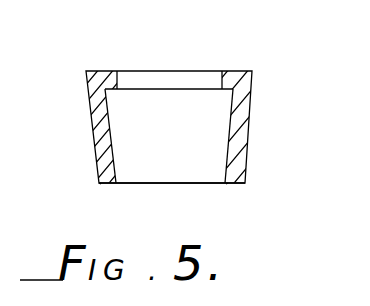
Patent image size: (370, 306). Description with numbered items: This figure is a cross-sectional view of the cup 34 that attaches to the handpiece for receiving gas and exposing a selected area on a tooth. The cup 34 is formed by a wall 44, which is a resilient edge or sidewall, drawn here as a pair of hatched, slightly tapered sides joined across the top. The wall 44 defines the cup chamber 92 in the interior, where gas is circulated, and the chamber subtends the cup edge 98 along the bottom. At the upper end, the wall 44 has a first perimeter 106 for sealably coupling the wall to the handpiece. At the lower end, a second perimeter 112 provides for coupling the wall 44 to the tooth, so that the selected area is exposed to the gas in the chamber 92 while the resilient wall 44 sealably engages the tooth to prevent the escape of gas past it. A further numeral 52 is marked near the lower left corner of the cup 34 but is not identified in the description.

The cup 34 is at (274, 111).
The first perimeter 106 is at (232, 70).
The wall 44 is at (243, 170).
The cup chamber 92 is at (181, 142).
The cup edge 98 is at (172, 185).
The lower left edge 52 is at (108, 182).
The second perimeter 112 is at (232, 184).